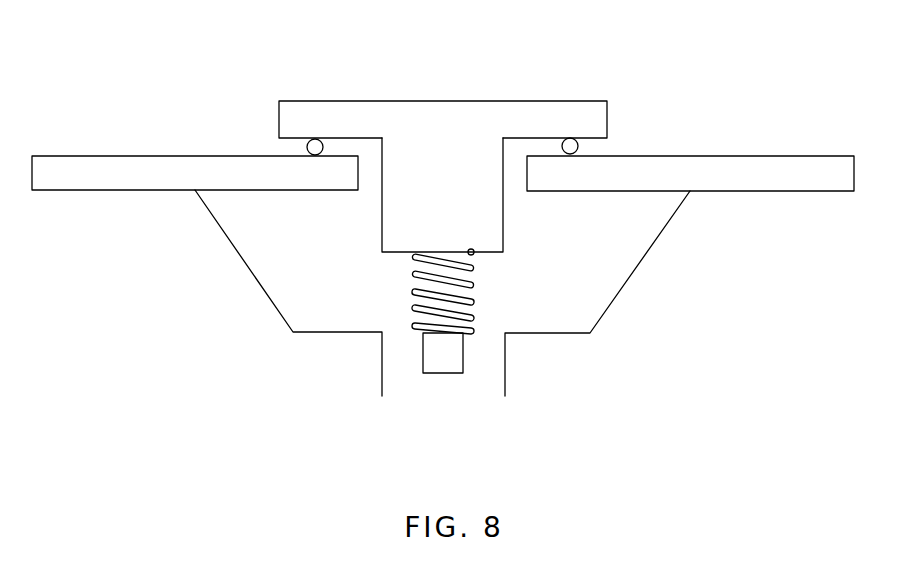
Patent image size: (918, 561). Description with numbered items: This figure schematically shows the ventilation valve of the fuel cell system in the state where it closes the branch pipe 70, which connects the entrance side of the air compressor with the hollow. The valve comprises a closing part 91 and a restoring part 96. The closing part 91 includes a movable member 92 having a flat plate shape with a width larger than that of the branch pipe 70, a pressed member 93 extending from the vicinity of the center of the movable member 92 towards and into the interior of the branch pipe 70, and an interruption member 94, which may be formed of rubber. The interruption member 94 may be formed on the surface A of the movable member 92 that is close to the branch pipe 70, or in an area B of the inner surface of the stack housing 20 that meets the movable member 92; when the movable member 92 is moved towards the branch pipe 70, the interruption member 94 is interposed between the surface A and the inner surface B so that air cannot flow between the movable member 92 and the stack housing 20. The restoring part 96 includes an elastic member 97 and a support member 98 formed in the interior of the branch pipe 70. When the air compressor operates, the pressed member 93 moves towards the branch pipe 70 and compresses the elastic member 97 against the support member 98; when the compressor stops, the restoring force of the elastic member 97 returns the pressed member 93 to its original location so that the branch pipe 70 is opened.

The closing part 91 is at (443, 131).
The movable member 92 is at (588, 113).
The pressed member 93 is at (403, 172).
The interruption member 94 is at (582, 141).
The stack housing 20 is at (787, 170).
The branch pipe 70 is at (507, 362).
The restoring part 96 is at (403, 306).
The elastic member 97 is at (474, 301).
The support member 98 is at (448, 362).
The surface of the movable member A is at (290, 140).
The area of the inner surface of the stack housing B is at (600, 153).